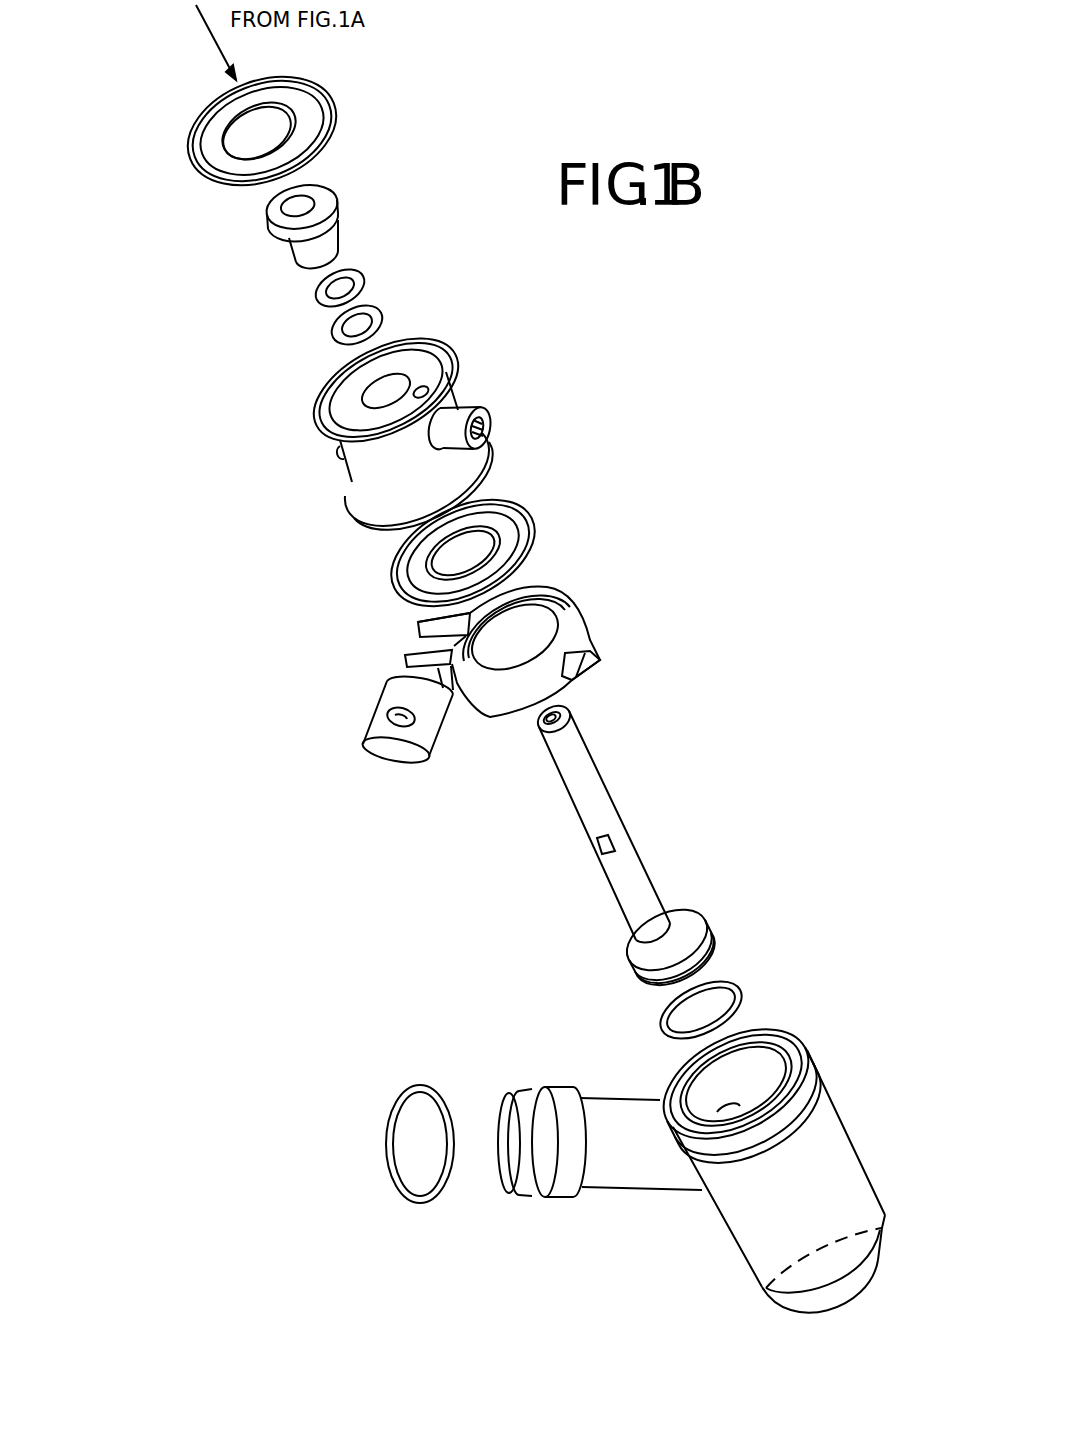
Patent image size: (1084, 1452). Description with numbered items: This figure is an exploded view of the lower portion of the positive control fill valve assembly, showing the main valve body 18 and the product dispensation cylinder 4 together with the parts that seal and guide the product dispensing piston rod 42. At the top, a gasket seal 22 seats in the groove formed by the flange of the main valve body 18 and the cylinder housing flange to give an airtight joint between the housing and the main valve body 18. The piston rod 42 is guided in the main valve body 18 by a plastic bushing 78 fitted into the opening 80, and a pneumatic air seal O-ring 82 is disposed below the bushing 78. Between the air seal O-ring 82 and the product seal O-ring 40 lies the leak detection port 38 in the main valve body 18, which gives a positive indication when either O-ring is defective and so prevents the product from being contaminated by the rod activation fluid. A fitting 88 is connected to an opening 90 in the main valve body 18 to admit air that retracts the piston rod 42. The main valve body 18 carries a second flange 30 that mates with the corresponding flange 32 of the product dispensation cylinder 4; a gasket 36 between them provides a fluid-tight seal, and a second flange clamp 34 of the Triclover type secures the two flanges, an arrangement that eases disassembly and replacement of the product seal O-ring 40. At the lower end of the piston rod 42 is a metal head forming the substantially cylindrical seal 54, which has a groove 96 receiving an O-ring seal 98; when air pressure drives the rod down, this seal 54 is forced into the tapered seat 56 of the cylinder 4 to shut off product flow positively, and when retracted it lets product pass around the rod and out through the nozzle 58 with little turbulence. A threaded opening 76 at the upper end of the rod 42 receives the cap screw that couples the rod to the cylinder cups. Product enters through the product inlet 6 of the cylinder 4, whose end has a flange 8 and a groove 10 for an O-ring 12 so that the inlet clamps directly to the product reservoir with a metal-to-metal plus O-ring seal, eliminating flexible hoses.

The product dispensation cylinder 4 is at (710, 1158).
The product inlet 6 is at (608, 1178).
The flange 8 is at (528, 1173).
The groove 10 is at (513, 1173).
The O-ring 12 is at (385, 1152).
The main valve body 18 is at (420, 401).
The gasket seal 22 is at (193, 172).
The second flange 30 is at (487, 472).
The flange 32 is at (790, 1033).
The second flange clamp 34 is at (496, 704).
The gasket 36 is at (403, 596).
The leak detection port 38 is at (341, 454).
The product seal O-ring 40 is at (373, 305).
The product dispensing piston rod 42 is at (585, 810).
The substantially cylindrical seal 54 is at (705, 926).
The tapered seat 56 is at (882, 1228).
The nozzle 58 is at (863, 1280).
The threaded opening 76 is at (563, 713).
The bushing 78 is at (272, 233).
The opening 80 is at (385, 376).
The pneumatic air seal O-ring 82 is at (317, 300).
The fitting 88 is at (489, 434).
The opening 90 is at (426, 388).
The groove 96 is at (657, 983).
The O-ring seal 98 is at (660, 1038).